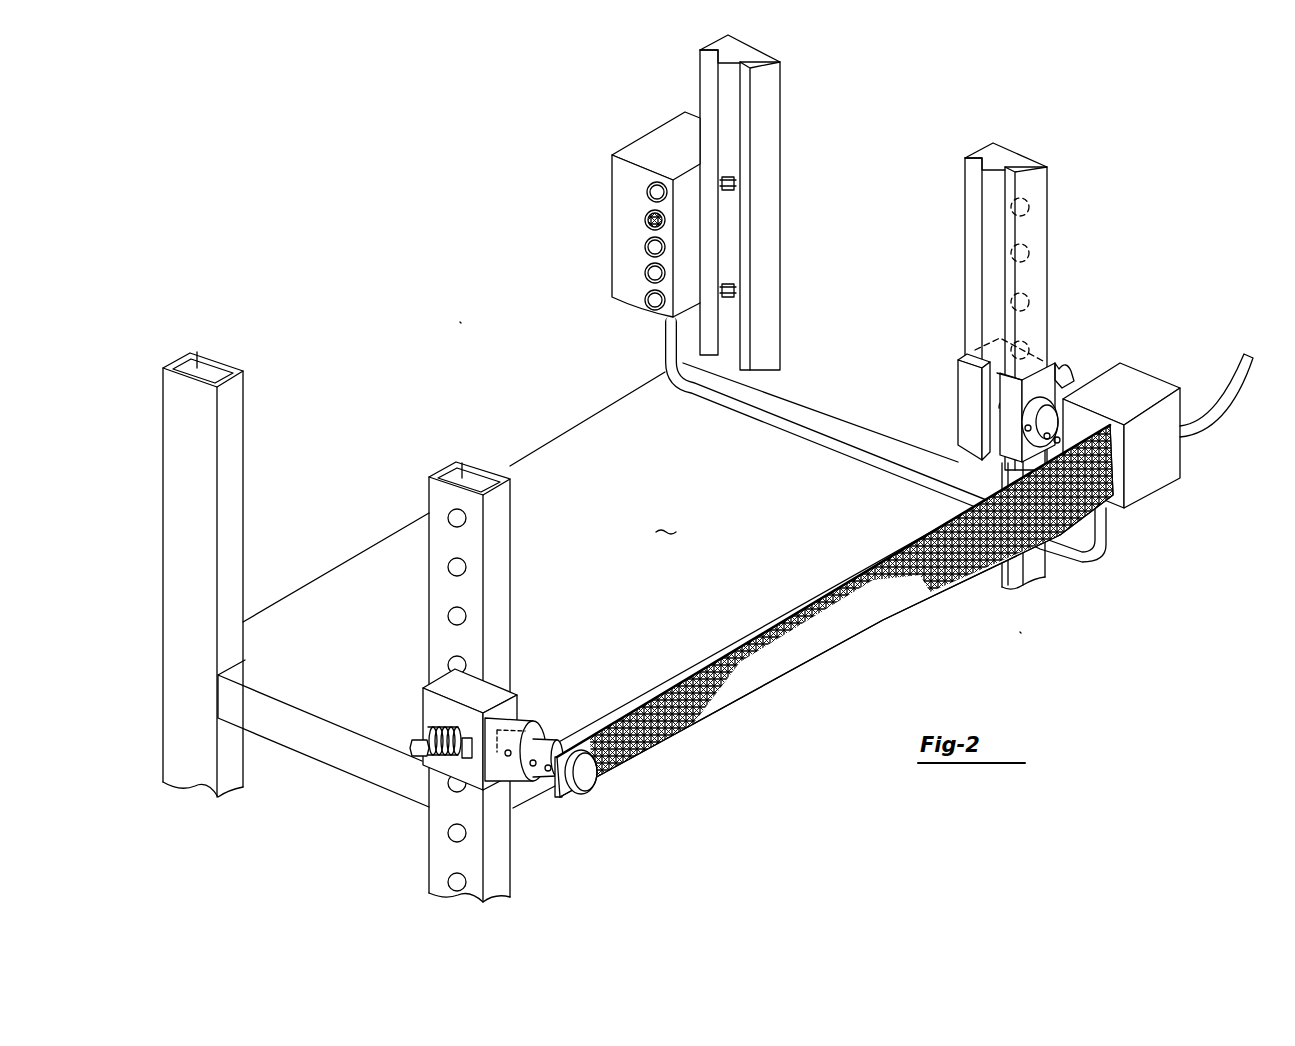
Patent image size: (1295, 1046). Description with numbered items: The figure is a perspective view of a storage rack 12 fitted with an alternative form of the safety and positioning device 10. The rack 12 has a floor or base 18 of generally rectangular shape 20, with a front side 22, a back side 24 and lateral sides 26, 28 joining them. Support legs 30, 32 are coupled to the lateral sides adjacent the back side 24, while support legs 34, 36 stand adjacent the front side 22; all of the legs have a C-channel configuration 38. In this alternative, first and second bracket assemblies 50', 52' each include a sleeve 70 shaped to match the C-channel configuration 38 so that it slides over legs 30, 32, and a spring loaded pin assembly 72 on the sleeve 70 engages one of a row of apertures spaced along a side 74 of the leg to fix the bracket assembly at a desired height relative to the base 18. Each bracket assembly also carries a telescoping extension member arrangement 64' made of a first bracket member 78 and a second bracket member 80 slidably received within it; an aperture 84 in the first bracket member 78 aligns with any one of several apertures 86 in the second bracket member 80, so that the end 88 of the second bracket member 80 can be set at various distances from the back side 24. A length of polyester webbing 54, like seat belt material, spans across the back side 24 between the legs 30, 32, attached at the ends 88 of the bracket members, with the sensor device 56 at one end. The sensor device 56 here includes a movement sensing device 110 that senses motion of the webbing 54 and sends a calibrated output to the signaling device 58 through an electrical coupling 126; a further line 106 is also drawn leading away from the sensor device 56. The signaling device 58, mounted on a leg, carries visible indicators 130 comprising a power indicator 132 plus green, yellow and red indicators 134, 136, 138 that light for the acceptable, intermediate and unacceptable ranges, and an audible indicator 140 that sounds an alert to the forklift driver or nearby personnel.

The safety and positioning device 10 is at (1026, 636).
The storage rack 12 is at (459, 319).
The base 18 is at (668, 519).
The generally rectangular shape 20 is at (649, 550).
The front side 22 is at (340, 567).
The back side 24 is at (788, 610).
The lateral side 26 is at (356, 757).
The lateral side 28 is at (853, 420).
The support leg 30 is at (464, 682).
The support leg 32 is at (990, 366).
The support leg 34 is at (153, 500).
The support leg 36 is at (790, 170).
The C-channel configuration 38 is at (198, 350).
The first bracket assembly 50' is at (494, 726).
The second bracket assembly 52' is at (1092, 388).
The webbing 54 is at (882, 632).
The sensor device 56 is at (1134, 462).
The signaling device 58 is at (618, 216).
The telescoping extension member arrangement 64' is at (494, 735).
The sleeve 70 is at (432, 707).
The spring loaded pin assembly 72 is at (418, 756).
The side 74 is at (445, 647).
The first bracket member 78 is at (517, 735).
The second bracket member 80 is at (558, 745).
The aperture 84 is at (505, 757).
The apertures 86 is at (534, 770).
The end 88 is at (590, 777).
The power cable 106 is at (1229, 380).
The movement sensing device 110 is at (1175, 462).
The electrical coupling 126 is at (798, 433).
The visible indicators 130 is at (601, 260).
The power indicator 132 is at (646, 192).
The green indicator 134 is at (644, 273).
The yellow indicator 136 is at (644, 302).
The red indicator 138 is at (644, 247).
The audible indicator 140 is at (644, 219).